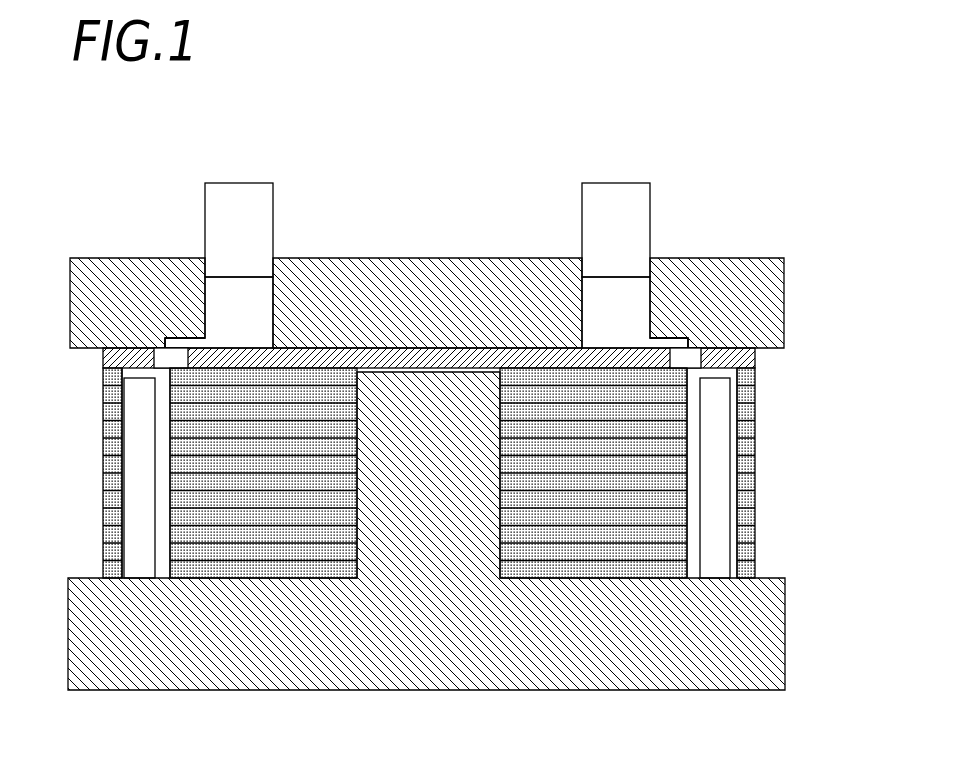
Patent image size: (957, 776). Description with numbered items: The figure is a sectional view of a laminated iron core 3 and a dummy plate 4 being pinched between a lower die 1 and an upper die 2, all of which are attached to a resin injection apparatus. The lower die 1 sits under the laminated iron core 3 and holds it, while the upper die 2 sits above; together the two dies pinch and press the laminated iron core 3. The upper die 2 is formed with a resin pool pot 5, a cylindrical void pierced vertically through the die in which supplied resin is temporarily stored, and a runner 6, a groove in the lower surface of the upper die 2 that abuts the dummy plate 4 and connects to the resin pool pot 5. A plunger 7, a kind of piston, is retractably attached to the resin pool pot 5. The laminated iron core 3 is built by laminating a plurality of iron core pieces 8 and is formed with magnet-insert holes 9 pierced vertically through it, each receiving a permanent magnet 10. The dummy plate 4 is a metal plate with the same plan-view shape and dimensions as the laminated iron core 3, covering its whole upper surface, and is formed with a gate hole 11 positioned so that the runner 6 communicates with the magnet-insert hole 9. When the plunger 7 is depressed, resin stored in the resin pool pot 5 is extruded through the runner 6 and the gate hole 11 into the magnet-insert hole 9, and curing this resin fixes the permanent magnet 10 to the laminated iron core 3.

The lower die 1 is at (765, 648).
The upper die 2 is at (760, 300).
The laminated iron core 3 is at (768, 422).
The dummy plate 4 is at (740, 364).
The resin pool pot 5 is at (245, 298).
The runner 6 is at (172, 360).
The plunger 7 is at (240, 198).
The iron core piece 8 is at (755, 553).
The magnet-insert hole 9 is at (165, 440).
The permanent magnet 10 is at (138, 482).
The gate hole 11 is at (157, 347).